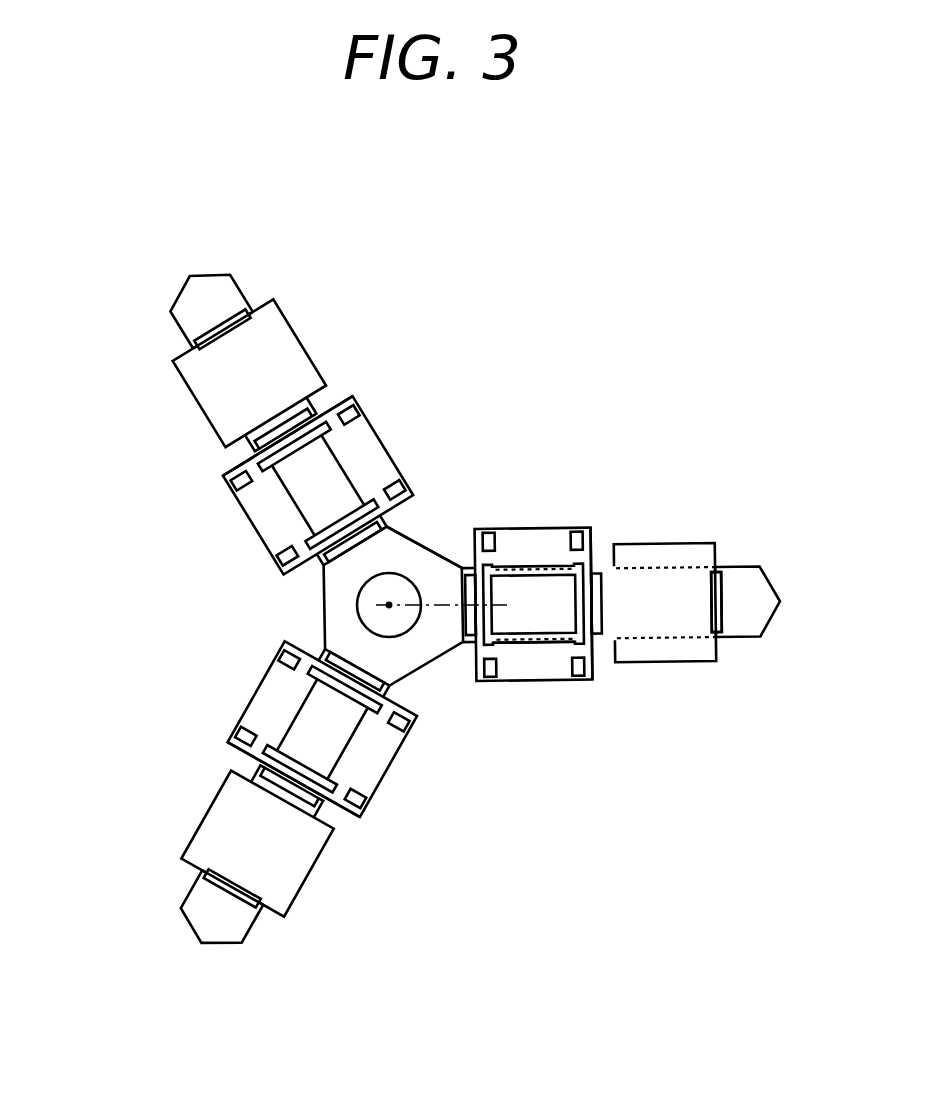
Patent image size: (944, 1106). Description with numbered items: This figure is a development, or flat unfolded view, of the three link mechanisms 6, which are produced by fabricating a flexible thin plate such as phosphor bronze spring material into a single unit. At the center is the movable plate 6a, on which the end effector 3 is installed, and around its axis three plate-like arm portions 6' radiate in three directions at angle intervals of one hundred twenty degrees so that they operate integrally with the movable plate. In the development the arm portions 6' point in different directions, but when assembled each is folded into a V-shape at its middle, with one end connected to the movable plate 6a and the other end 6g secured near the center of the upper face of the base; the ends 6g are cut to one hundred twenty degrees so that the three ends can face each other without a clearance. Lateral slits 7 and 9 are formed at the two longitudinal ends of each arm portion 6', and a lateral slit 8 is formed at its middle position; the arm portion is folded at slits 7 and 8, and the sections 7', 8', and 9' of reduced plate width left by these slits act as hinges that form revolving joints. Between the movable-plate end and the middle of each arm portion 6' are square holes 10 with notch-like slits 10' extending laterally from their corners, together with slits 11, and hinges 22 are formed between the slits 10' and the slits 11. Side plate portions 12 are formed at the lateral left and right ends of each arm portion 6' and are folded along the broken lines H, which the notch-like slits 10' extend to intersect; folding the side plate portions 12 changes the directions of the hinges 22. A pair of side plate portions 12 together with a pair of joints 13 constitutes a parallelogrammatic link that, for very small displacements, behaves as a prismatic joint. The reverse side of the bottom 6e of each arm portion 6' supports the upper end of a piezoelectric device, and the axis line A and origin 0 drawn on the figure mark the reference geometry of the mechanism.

The origin 0 is at (389, 604).
The end effector 3 is at (360, 621).
The link mechanisms 6 is at (424, 500).
The arm portion 6' is at (435, 607).
The movable plate 6a is at (343, 602).
The bottom 6e is at (678, 622).
The end 6g is at (781, 598).
The lateral slit 7 is at (400, 614).
The reduced-width section 7' is at (454, 676).
The lateral slit 8 is at (462, 608).
The reduced-width section 8' is at (612, 642).
The lateral slit 9 is at (746, 571).
The reduced-width section 9' is at (737, 539).
The square hole 10 is at (544, 688).
The notch-like slit 10' is at (440, 616).
The slit 11 is at (563, 645).
The side plate portion 12 is at (533, 542).
The joint 13 is at (466, 592).
The hinge 22 is at (497, 553).
The axis A is at (500, 602).
The broken line H is at (667, 647).